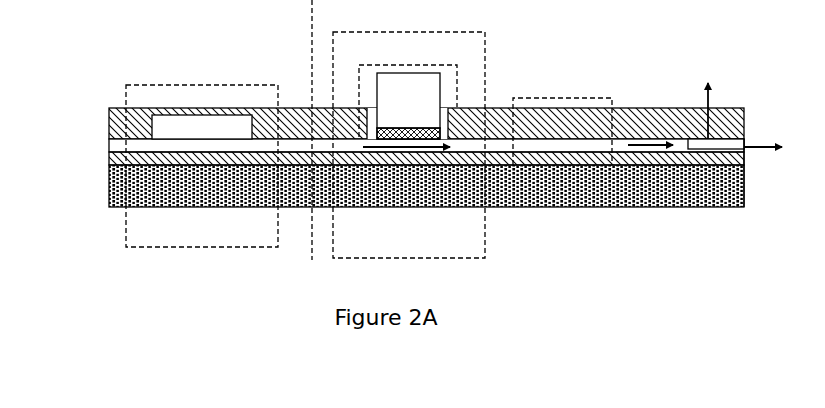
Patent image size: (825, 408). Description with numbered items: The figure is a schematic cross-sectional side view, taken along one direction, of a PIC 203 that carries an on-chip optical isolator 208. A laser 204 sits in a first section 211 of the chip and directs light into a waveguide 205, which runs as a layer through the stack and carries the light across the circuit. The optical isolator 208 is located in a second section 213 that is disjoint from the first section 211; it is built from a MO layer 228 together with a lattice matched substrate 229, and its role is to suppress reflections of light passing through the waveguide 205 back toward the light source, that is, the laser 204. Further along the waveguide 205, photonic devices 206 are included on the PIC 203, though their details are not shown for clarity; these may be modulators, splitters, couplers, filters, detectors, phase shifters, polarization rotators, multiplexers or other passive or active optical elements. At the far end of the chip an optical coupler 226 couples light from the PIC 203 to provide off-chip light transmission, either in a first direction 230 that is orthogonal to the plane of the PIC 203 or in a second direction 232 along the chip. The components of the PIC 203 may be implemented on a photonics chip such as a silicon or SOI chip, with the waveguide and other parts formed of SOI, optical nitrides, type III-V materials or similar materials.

The PIC 203 is at (257, 63).
The laser 204 is at (243, 145).
The waveguide 205 is at (108, 142).
The photonic devices 206 is at (618, 97).
The on-chip optical isolator 208 is at (460, 72).
The first section 211 is at (202, 166).
The second section 213 is at (409, 145).
The optical coupler 226 is at (744, 142).
The MO layer 228 is at (387, 127).
The lattice matched substrate 229 is at (407, 106).
The first direction 230 is at (708, 100).
The second direction 232 is at (744, 150).